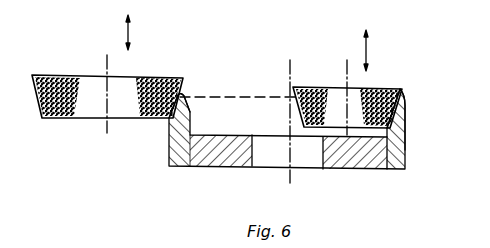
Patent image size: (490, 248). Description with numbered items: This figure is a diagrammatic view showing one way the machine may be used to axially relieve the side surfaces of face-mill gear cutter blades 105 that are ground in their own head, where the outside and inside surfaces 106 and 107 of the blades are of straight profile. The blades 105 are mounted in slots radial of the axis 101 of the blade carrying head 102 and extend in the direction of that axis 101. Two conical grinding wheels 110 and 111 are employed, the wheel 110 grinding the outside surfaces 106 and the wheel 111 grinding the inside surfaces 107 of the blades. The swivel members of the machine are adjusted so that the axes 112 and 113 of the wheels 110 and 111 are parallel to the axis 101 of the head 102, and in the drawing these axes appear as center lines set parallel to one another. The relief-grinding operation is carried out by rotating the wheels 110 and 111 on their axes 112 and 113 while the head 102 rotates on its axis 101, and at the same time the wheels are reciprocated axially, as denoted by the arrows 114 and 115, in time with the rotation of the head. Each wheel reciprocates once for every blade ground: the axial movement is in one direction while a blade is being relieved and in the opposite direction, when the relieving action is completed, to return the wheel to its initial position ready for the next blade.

The axis of the blade carrying head 101 is at (290, 66).
The blade carrying head 102 is at (212, 157).
The blades 105 is at (397, 135).
The outside surface 106 is at (392, 115).
The inside surface 107 is at (188, 104).
The conical grinding wheel 110 is at (93, 112).
The conical grinding wheel 111 is at (385, 88).
The axis of wheel 112 is at (107, 62).
The axis of wheel 113 is at (347, 66).
The arrow 114 is at (128, 35).
The arrow 115 is at (366, 50).